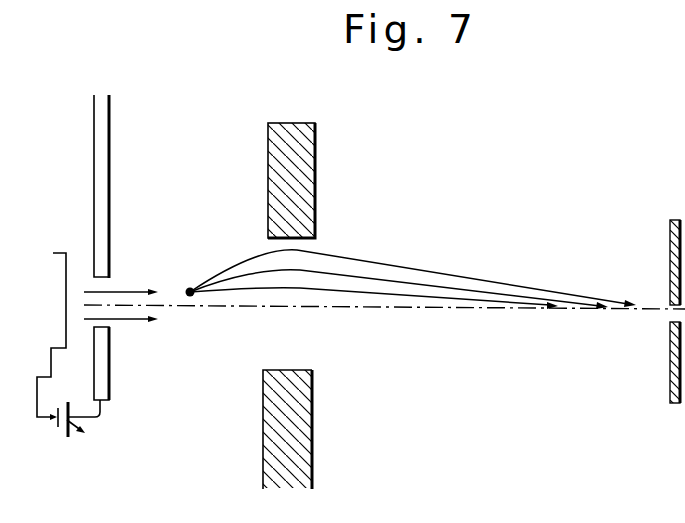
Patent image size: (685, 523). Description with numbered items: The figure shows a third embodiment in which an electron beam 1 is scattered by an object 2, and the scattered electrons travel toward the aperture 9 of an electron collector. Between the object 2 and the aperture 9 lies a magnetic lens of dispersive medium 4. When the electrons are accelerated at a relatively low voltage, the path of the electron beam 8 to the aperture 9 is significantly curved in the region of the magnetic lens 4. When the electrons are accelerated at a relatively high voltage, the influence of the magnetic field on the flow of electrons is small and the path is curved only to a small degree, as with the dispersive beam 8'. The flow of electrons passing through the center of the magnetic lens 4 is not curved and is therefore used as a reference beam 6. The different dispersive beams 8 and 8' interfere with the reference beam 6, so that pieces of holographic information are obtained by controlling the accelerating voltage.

The electron beam 1 is at (123, 292).
The object 2 is at (192, 288).
The magnetic lens of dispersive medium 4 is at (302, 181).
The reference beam 6 is at (468, 312).
The electron beam 8 is at (413, 267).
The dispersive beam 8' is at (374, 323).
The aperture 9 is at (668, 363).